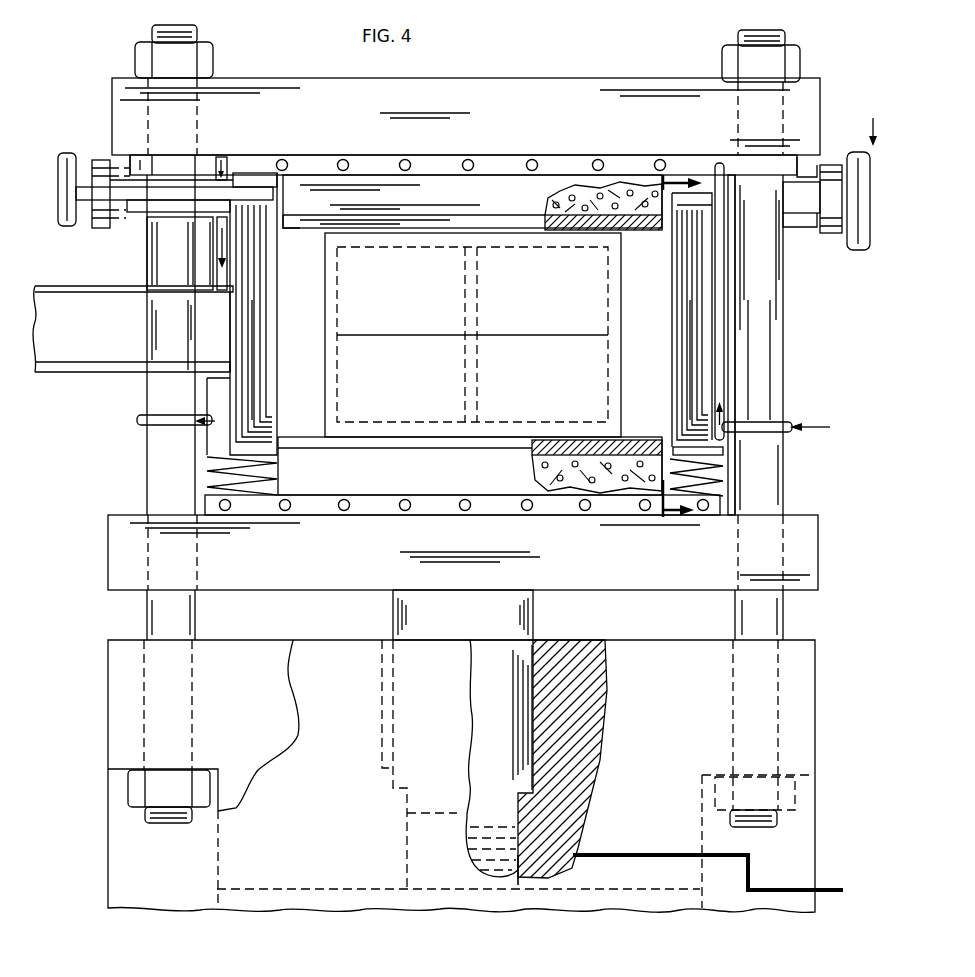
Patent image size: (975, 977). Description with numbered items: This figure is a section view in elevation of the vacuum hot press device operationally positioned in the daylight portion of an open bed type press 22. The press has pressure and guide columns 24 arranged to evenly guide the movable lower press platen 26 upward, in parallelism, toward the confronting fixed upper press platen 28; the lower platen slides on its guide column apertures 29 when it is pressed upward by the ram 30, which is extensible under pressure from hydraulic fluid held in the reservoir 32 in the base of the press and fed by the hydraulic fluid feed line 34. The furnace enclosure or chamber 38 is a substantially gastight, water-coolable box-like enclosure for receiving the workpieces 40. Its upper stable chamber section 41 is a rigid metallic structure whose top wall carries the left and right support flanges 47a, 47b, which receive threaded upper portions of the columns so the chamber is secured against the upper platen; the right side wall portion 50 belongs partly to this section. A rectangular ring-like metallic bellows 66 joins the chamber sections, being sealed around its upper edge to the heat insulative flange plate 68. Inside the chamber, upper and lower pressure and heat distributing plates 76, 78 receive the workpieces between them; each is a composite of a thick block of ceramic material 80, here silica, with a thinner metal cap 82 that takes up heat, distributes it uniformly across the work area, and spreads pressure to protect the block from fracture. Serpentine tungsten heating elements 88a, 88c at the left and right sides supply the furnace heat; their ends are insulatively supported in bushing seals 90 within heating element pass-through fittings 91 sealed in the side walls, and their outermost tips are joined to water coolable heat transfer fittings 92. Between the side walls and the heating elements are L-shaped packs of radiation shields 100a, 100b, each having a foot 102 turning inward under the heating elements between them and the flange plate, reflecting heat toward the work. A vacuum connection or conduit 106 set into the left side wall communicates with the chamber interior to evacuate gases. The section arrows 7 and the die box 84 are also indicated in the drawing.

The section line 7-7 arrows 7 is at (678, 346).
The open bed type press 22 is at (800, 669).
The pressure and guide columns 24 is at (183, 281).
The lower press platen 26 is at (442, 545).
The upper press platen 28 is at (442, 110).
The guide column apertures 29 is at (197, 119).
The ram 30 is at (535, 605).
The reservoir 32 is at (493, 863).
The hydraulic fluid feed line 34 is at (660, 862).
The furnace enclosure or chamber 38 is at (725, 262).
The workpieces 40 is at (592, 312).
The upper stable chamber section 41 is at (190, 251).
The left support flange 47a is at (143, 165).
The right support flange 47b is at (800, 166).
The right side wall portion 50 is at (730, 379).
The bellows 66 is at (207, 478).
The flange plate 68 is at (268, 447).
The upper pressure and heat distributing plate 76 is at (305, 203).
The lower pressure and heat distributing plate 78 is at (384, 474).
The block of ceramic material 80 is at (583, 190).
The metal cap 82 is at (300, 230).
The die box 84 is at (317, 437).
The heating element 88a is at (266, 299).
The heating element 88c is at (675, 276).
The bushing seals 90 is at (103, 160).
The heating element pass-through fittings 91 is at (140, 213).
The water coolable heat transfer fittings 92 is at (58, 190).
The radiation shield pack 100a is at (246, 327).
The radiation shield pack 100b is at (700, 339).
The foot 102 is at (700, 451).
The vacuum connection or conduit 106 is at (58, 378).